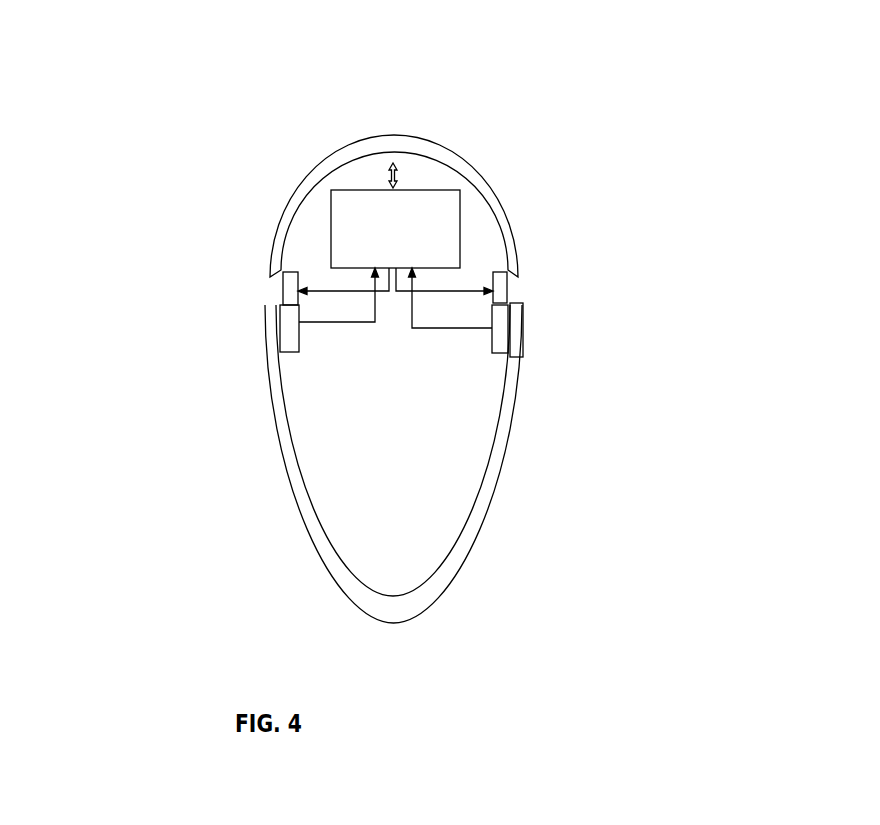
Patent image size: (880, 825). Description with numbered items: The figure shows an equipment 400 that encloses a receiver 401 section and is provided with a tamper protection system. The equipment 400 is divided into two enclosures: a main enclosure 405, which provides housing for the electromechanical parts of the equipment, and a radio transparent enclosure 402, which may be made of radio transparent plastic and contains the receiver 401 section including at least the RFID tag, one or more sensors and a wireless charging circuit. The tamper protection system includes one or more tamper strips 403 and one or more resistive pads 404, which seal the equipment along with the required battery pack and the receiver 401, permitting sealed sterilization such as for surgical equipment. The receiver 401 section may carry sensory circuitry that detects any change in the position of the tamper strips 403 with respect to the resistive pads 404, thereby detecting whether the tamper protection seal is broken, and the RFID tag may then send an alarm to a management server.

The equipment 400 is at (412, 330).
The receiver 401 is at (395, 229).
The radio transparent enclosure 402 is at (418, 138).
The tamper strips 403 is at (492, 301).
The resistive pads 404 is at (300, 330).
The main enclosure 405 is at (499, 498).